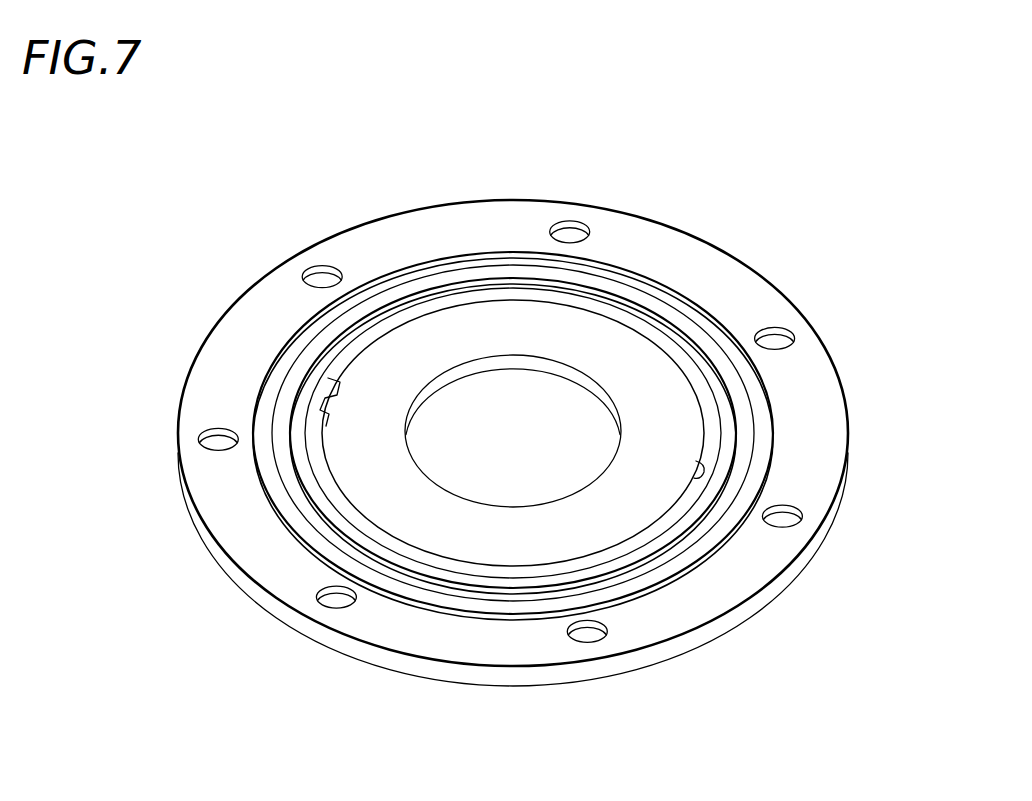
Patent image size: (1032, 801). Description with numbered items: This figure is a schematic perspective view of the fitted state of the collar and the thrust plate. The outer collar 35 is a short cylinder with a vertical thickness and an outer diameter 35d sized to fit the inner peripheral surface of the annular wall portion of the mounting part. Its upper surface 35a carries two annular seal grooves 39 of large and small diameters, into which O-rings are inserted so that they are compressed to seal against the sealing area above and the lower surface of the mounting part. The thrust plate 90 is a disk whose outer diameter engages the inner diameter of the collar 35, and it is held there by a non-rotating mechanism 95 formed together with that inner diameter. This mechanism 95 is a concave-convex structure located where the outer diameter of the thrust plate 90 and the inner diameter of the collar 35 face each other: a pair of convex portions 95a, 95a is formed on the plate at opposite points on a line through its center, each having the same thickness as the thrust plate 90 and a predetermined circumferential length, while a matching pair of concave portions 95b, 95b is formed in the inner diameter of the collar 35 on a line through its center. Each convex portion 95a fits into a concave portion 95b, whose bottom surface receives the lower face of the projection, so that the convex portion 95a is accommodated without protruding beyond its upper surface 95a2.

The outer collar 35 is at (673, 657).
The upper surface of the outer collar 35a is at (247, 537).
The outer diameter of the outer collar 35d is at (438, 672).
The annular seal groove 39 is at (767, 383).
The thrust plate 90 is at (470, 322).
The non-rotating mechanism 95 is at (516, 400).
The convex portion 95a is at (270, 370).
The concave portion 95b is at (318, 404).
The upper surface of the convex portion 95a2 is at (338, 392).